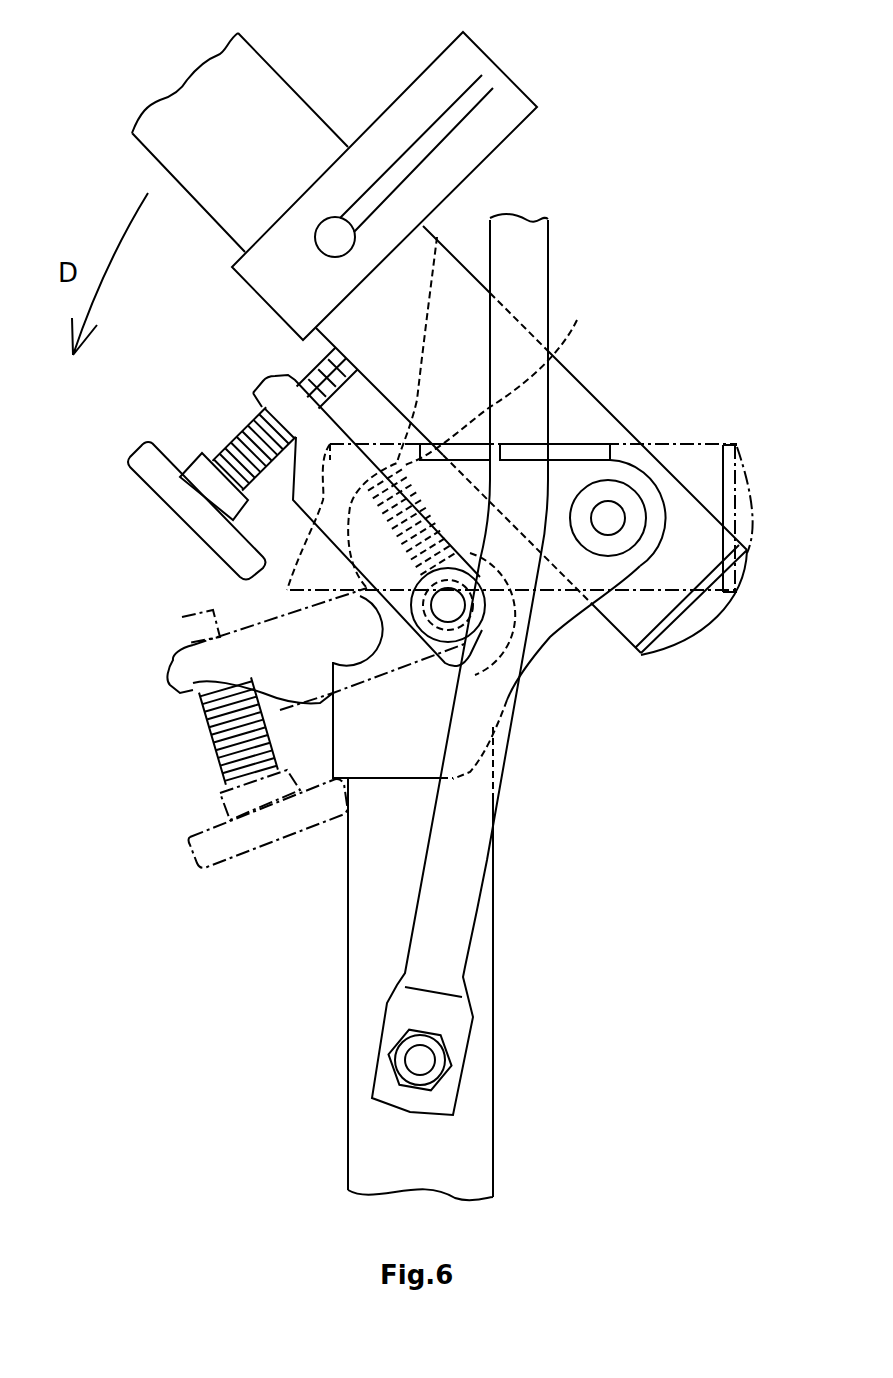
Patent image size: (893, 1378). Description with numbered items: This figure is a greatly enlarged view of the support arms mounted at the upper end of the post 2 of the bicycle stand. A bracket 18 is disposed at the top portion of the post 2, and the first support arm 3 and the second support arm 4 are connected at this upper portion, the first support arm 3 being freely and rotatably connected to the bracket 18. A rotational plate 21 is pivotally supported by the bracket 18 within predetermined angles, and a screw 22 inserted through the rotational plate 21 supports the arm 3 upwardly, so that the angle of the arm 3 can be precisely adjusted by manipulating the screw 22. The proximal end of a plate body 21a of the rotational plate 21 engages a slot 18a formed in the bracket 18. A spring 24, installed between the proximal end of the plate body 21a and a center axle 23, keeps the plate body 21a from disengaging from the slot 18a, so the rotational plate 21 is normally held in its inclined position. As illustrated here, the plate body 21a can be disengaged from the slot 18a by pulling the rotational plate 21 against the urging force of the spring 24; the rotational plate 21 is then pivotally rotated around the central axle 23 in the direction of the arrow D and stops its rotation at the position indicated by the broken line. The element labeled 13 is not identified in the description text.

The post 2 is at (497, 978).
The first support arm 3 is at (587, 397).
The second support arm 4 is at (472, 908).
The plate 13 is at (507, 137).
The bracket 18 is at (550, 623).
The slot 18a is at (418, 395).
The rotational plate 21 is at (263, 379).
The plate body 21a is at (370, 428).
The screw 22 is at (303, 367).
The center axle 23 is at (463, 613).
The spring 24 is at (543, 347).